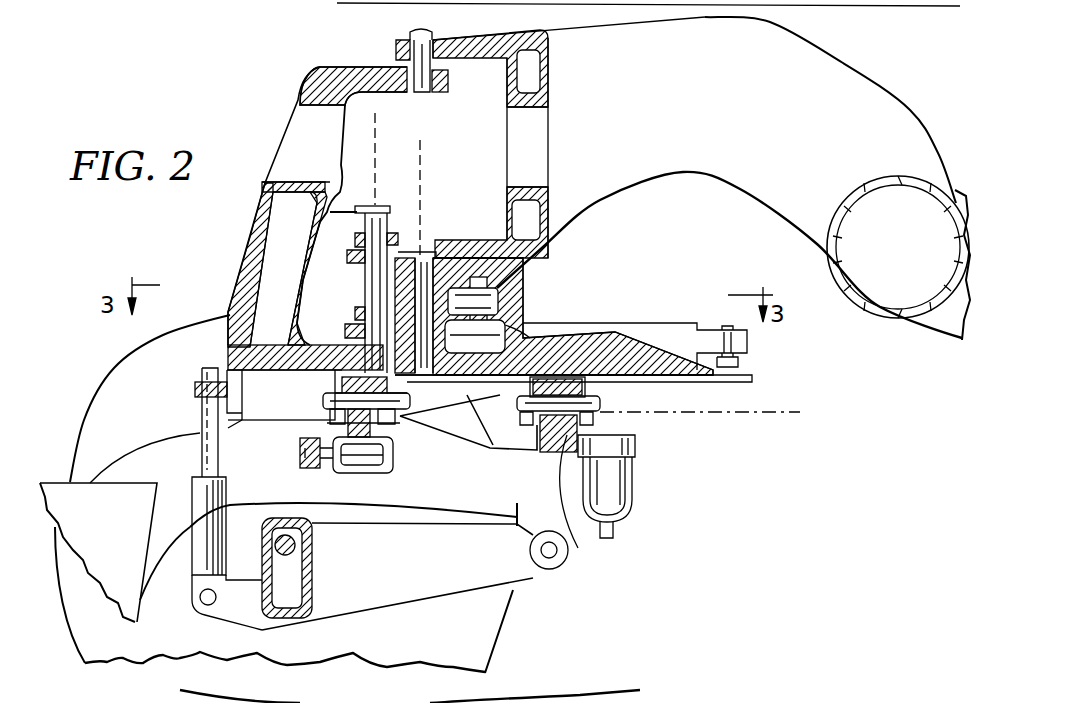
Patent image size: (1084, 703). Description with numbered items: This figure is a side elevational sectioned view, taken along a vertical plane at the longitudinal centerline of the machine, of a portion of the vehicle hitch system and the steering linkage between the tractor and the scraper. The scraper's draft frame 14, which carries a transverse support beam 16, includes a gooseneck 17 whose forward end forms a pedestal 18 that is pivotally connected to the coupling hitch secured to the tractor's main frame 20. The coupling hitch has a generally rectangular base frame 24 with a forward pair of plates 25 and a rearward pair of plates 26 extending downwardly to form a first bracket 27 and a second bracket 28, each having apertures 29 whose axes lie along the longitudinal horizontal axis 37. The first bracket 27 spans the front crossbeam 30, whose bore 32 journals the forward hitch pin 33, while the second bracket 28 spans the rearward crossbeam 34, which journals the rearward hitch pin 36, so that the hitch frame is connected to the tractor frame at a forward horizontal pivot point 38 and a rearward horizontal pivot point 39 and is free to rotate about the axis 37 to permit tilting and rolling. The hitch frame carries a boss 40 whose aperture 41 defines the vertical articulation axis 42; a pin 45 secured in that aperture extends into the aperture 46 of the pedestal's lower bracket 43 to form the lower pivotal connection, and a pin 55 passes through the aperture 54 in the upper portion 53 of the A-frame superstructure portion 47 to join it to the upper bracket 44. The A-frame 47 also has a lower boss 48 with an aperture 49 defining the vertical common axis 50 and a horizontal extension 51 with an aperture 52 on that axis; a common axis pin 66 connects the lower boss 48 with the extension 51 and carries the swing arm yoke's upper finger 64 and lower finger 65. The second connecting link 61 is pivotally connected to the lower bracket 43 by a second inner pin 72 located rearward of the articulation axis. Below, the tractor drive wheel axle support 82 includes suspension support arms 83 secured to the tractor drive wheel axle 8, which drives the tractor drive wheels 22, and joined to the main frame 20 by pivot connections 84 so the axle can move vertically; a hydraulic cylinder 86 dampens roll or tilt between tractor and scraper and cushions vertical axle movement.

The tractor drive wheel axle 8 is at (292, 620).
The draft frame 14 is at (872, 59).
The transverse support beam 16 is at (893, 285).
The gooseneck 17 is at (908, 110).
The pedestal 18 is at (552, 82).
The main frame 20 is at (572, 562).
The tractor drive wheels 22 is at (82, 662).
The base frame 24 is at (755, 382).
The forward pair of plates 25 is at (335, 393).
The rearward pair of plates 26 is at (450, 380).
The first bracket 27 is at (257, 410).
The second bracket 28 is at (605, 408).
The apertures 29 is at (340, 408).
The front crossbeam 30 is at (348, 473).
The bore 32 is at (359, 465).
The forward hitch pin 33 is at (410, 395).
The rearward crossbeam 34 is at (562, 445).
The rearward hitch pin 36 is at (487, 435).
The horizontal axis 37 is at (697, 412).
The forward horizontal pivot point 38 is at (312, 425).
The rearward horizontal pivot point 39 is at (608, 540).
The boss 40 is at (540, 323).
The aperture 41 is at (493, 348).
The vertical articulation axis 42 is at (423, 150).
The lower bracket 43 is at (447, 258).
The upper bracket 44 is at (462, 38).
The pin 45 is at (505, 322).
The aperture 46 is at (412, 300).
The A-frame superstructure portion 47 is at (235, 188).
The lower boss 48 is at (293, 342).
The aperture 49 is at (330, 372).
The common axis 50 is at (377, 142).
The extension 51 is at (338, 172).
The aperture 52 is at (372, 207).
The upper portion 53 is at (322, 67).
The aperture 54 is at (420, 90).
The pin 55 is at (414, 30).
The second connecting link 61 is at (500, 290).
The upper finger 64 is at (345, 256).
The lower finger 65 is at (347, 325).
The common axis pin 66 is at (295, 295).
The second inner pin 72 is at (527, 274).
The tractor drive wheel axle support 82 is at (486, 592).
The suspension support arms 83 is at (390, 577).
The pivot connections 84 is at (549, 558).
The hydraulic cylinder 86 is at (193, 487).